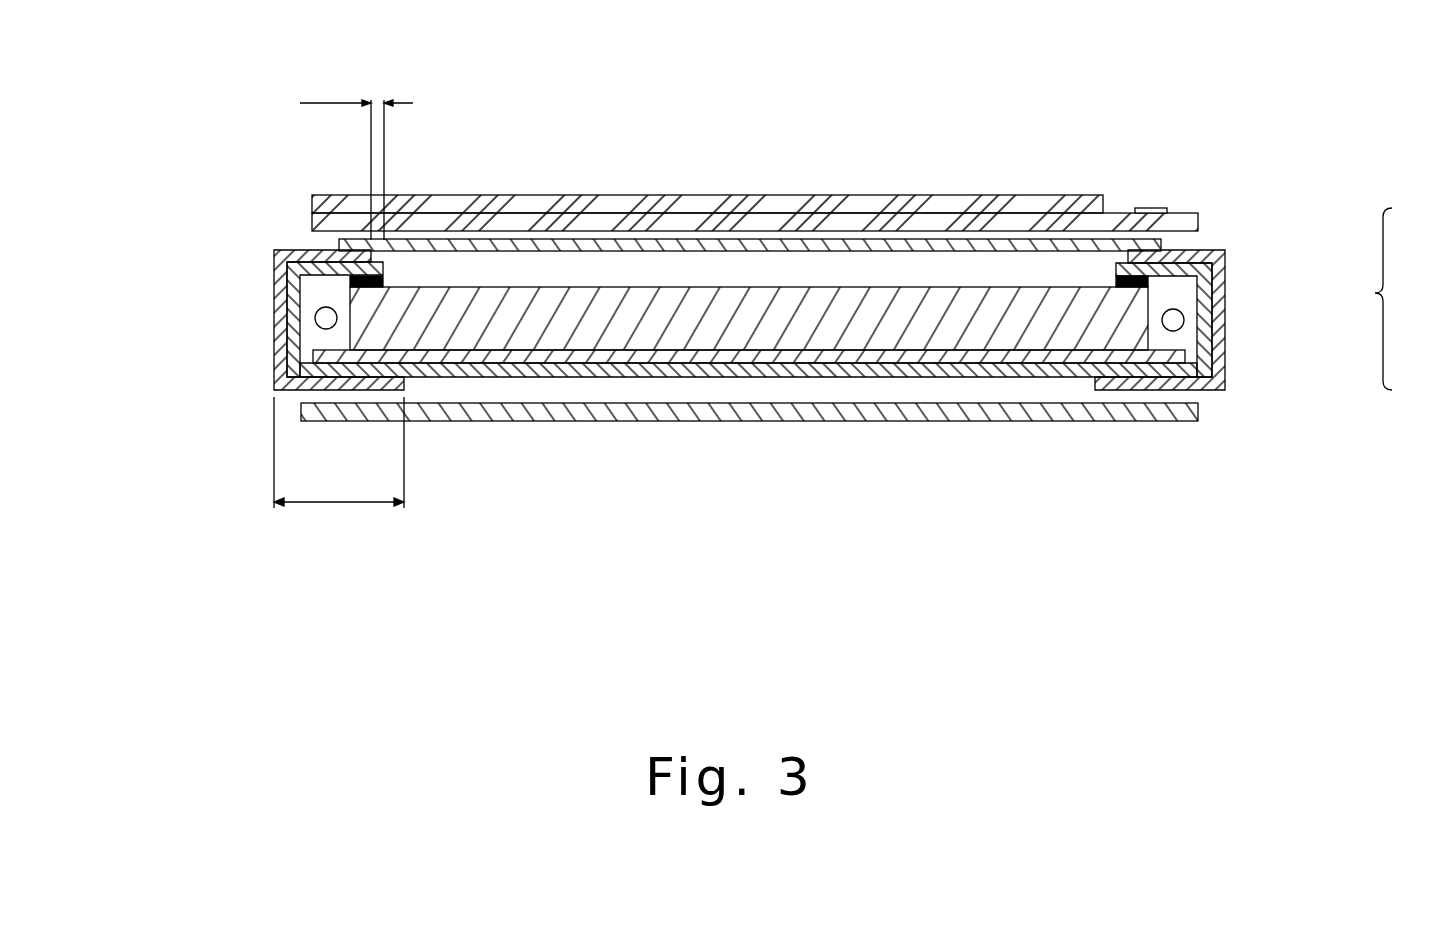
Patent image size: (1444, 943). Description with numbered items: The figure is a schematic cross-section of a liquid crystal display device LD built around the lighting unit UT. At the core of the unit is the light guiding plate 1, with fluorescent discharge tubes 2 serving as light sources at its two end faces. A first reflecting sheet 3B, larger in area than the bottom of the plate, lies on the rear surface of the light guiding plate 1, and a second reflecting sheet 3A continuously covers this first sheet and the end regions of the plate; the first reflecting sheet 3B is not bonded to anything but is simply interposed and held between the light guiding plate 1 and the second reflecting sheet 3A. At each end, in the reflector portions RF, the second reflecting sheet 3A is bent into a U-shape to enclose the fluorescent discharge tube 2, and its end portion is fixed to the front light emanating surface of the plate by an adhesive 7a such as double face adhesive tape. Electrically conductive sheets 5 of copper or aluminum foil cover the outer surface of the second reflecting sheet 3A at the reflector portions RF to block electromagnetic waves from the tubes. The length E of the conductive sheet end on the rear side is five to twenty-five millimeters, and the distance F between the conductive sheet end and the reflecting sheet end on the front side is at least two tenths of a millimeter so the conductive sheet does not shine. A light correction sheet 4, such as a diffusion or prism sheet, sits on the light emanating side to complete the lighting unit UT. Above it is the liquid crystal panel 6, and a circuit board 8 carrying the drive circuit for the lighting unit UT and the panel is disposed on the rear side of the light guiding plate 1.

The light guiding plate 1 is at (692, 335).
The fluorescent discharge tube 2 is at (288, 333).
The second reflecting sheet 3A is at (812, 372).
The first reflecting sheet 3B is at (963, 360).
The light correction sheet 4 is at (608, 245).
The electrically conductive sheet 5 is at (276, 313).
The liquid crystal panel 6 is at (1098, 222).
The adhesive 7a is at (383, 282).
The circuit board 8 is at (535, 417).
The reflector portion RF is at (318, 304).
The length E is at (339, 467).
The distance F is at (356, 158).
The liquid crystal display device LD is at (778, 27).
The lighting unit UT is at (1438, 308).